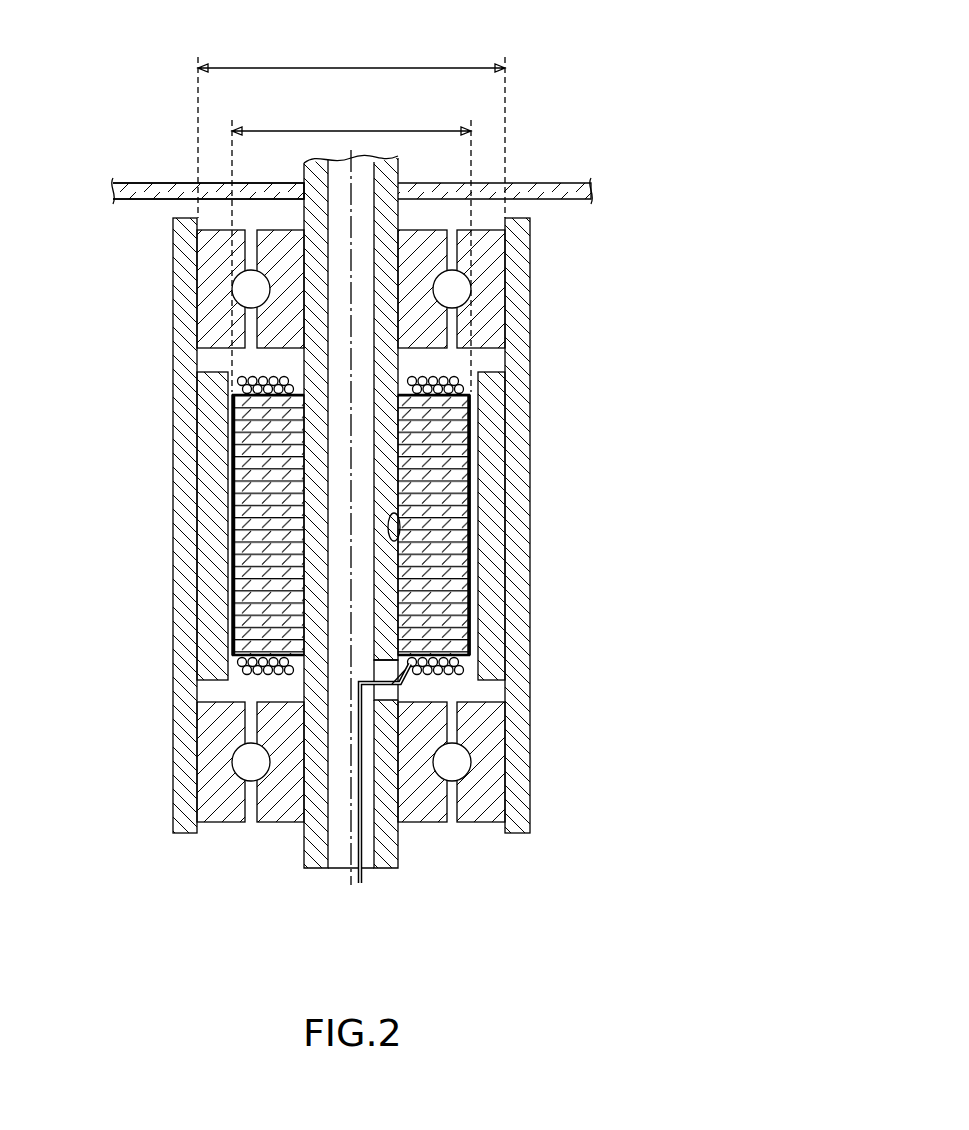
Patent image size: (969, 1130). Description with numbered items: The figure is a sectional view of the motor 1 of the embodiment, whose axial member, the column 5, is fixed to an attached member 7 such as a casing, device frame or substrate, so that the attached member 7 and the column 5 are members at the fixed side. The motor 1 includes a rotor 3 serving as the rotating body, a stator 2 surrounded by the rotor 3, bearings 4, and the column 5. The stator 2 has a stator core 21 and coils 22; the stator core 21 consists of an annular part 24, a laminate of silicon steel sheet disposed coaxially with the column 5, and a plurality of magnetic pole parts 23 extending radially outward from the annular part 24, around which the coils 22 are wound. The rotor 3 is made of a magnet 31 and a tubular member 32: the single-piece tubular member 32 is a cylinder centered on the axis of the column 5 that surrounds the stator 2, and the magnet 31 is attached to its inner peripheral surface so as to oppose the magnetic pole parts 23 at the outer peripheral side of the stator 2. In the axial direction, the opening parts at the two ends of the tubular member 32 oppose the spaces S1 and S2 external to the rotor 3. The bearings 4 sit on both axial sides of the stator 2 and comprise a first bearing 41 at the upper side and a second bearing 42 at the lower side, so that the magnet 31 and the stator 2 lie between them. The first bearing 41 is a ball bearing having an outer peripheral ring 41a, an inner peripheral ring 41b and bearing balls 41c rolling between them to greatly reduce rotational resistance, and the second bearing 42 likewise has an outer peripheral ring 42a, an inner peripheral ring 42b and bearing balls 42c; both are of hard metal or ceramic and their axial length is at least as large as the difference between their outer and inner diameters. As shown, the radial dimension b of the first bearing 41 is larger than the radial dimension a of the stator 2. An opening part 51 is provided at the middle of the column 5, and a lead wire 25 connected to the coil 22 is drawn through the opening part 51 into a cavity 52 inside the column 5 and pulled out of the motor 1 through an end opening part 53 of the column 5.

The motor 1 is at (623, 85).
The stator 2 is at (641, 660).
The rotor 3 is at (411, 525).
The bearings 4 is at (463, 538).
The column 5 is at (313, 858).
The attached member 7 is at (553, 183).
The stator core 21 is at (594, 486).
The coils 22 is at (440, 675).
The magnetic pole parts 23 is at (462, 493).
The annular part 24 is at (400, 540).
The lead wire 25 is at (373, 852).
The magnet 31 is at (493, 448).
The tubular member 32 is at (520, 408).
The first bearing 41 is at (645, 206).
The outer peripheral ring 41a is at (487, 255).
The inner peripheral ring 41b is at (432, 240).
The bearing balls 41c is at (452, 289).
The second bearing 42 is at (631, 731).
The outer peripheral ring 42a is at (478, 795).
The inner peripheral ring 42b is at (422, 817).
The bearing balls 42c is at (453, 762).
The opening part 51 is at (392, 690).
The cavity 52 is at (340, 848).
The end opening part 53 is at (368, 852).
The space S1 is at (222, 214).
The space S2 is at (245, 830).
The radial dimension a is at (351, 246).
The radial dimension b is at (351, 128).